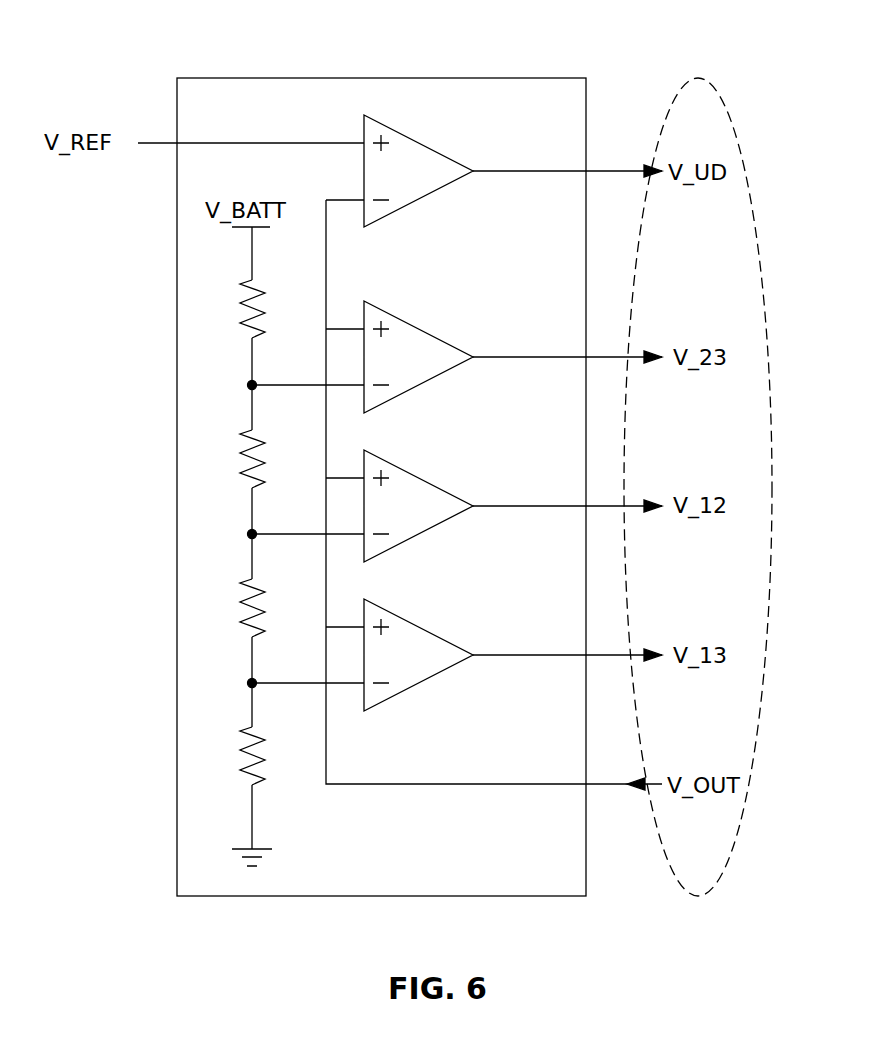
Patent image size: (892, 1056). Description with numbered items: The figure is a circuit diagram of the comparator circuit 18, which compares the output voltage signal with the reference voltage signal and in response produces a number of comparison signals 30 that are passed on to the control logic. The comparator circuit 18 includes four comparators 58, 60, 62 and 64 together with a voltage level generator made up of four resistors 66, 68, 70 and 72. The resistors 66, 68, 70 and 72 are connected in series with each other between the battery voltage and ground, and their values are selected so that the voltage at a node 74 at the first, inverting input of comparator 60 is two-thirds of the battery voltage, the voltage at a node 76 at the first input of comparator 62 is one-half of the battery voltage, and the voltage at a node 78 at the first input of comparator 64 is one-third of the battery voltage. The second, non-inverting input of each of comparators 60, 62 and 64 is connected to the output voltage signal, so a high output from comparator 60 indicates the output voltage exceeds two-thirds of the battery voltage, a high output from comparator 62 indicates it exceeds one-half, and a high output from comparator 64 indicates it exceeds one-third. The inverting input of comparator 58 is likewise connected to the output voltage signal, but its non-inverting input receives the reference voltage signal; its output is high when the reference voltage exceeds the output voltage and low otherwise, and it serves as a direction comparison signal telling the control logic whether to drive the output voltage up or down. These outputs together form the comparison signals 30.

The comparator circuit 18 is at (284, 78).
The comparison signals 30 is at (722, 91).
The comparator 58 is at (428, 147).
The comparator 60 is at (422, 328).
The comparator 62 is at (430, 478).
The comparator 64 is at (428, 628).
The resistor 66 is at (240, 290).
The resistor 68 is at (240, 462).
The resistor 70 is at (240, 611).
The resistor 72 is at (248, 762).
The node 74 is at (248, 383).
The node 76 is at (248, 535).
The node 78 is at (248, 683).